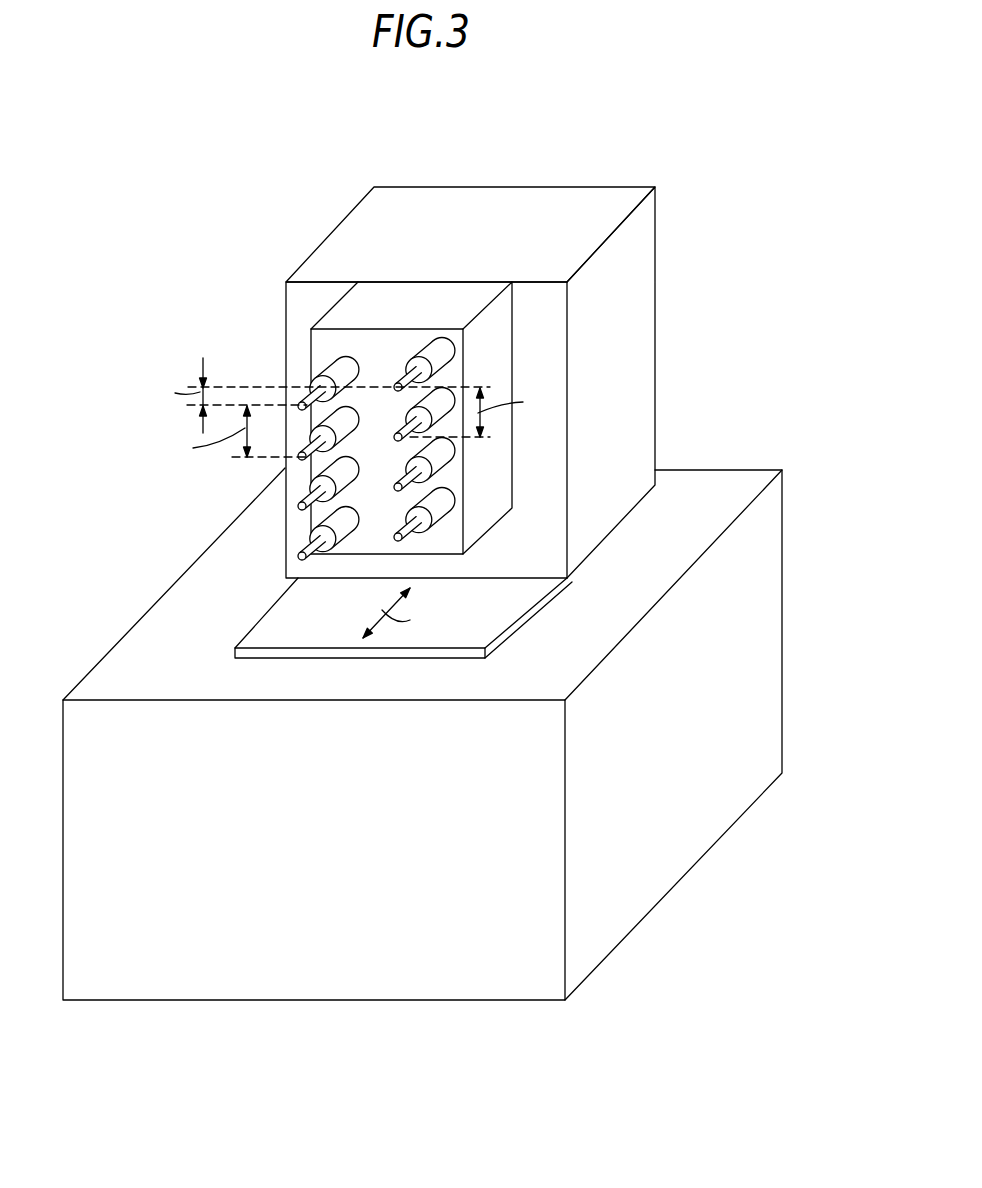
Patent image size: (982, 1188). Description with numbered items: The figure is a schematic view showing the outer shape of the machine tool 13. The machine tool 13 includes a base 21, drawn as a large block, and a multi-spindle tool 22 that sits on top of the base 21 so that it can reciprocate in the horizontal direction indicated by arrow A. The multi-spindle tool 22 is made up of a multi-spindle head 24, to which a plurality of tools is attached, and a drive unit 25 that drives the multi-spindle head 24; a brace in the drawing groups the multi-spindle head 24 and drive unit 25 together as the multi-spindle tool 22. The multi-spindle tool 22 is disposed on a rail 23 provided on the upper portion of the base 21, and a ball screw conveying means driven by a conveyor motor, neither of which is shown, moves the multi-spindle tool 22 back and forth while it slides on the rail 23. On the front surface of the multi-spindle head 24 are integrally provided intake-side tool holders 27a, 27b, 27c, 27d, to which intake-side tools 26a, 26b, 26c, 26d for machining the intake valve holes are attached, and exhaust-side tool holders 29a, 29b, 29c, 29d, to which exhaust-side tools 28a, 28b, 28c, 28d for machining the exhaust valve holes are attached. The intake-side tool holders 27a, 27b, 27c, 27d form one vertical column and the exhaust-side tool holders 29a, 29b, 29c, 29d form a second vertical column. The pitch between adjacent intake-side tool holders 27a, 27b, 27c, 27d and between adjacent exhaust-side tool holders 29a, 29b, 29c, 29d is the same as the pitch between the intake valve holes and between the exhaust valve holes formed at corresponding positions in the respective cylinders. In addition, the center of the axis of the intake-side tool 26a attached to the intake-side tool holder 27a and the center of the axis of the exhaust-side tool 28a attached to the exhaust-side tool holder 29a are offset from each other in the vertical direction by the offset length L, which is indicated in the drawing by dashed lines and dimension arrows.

The machine tool 13 is at (175, 250).
The base 21 is at (743, 480).
The multi-spindle tool 22 is at (330, 143).
The rail 23 is at (505, 608).
The multi-spindle head 24 is at (340, 315).
The drive unit 25 is at (378, 230).
The intake-side tool 26a is at (302, 402).
The intake-side tool 26b is at (302, 457).
The intake-side tool 26c is at (307, 507).
The intake-side tool 26d is at (300, 560).
The intake-side tool holder 27a is at (337, 367).
The intake-side tool holder 27b is at (307, 417).
The intake-side tool holder 27c is at (313, 467).
The intake-side tool holder 27d is at (308, 520).
The exhaust-side tool 28a is at (402, 375).
The exhaust-side tool 28b is at (408, 433).
The exhaust-side tool 28c is at (413, 478).
The exhaust-side tool 28d is at (413, 530).
The exhaust-side tool holder 29a is at (443, 352).
The exhaust-side tool holder 29b is at (438, 408).
The exhaust-side tool holder 29c is at (440, 458).
The exhaust-side tool holder 29d is at (440, 507).